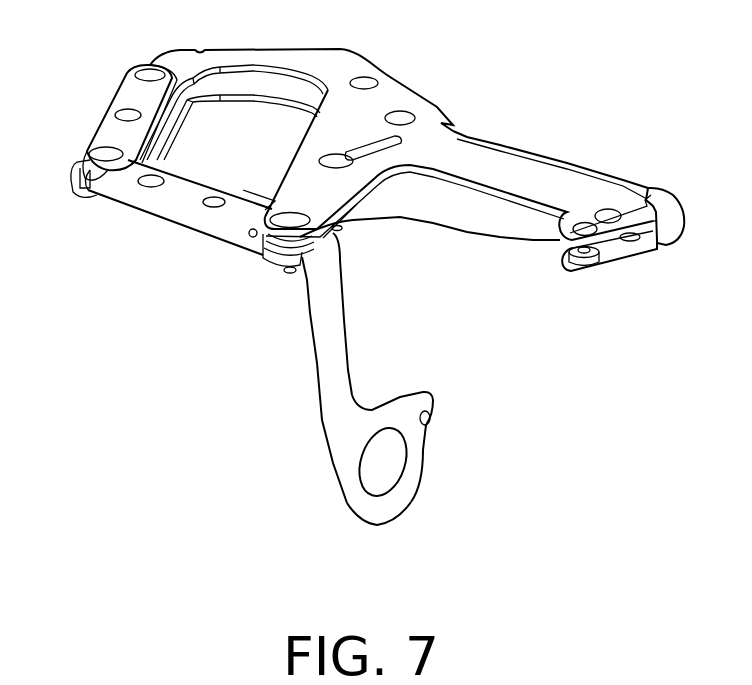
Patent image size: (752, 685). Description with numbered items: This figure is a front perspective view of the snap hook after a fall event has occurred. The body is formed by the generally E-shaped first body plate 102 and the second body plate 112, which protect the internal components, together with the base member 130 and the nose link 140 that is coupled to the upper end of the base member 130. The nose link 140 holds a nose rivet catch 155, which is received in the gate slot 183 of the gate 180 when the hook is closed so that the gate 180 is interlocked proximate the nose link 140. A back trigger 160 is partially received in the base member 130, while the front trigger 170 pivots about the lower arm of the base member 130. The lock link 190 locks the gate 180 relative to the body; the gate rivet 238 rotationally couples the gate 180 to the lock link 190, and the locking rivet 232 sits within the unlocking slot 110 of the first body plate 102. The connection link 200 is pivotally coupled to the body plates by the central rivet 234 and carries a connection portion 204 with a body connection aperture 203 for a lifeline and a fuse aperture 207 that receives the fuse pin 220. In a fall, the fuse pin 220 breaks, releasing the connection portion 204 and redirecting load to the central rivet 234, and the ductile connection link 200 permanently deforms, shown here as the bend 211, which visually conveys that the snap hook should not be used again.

The first body plate 102 is at (455, 150).
The unlocking slot 110 is at (387, 74).
The second body plate 112 is at (252, 80).
The base member 130 is at (670, 212).
The nose link 140 is at (142, 88).
The nose rivet catch 155 is at (104, 154).
The back trigger 160 is at (507, 145).
The front trigger 170 is at (457, 214).
The gate 180 is at (145, 196).
The gate slot 183 is at (93, 195).
The lock link 190 is at (258, 196).
The connection link 200 is at (340, 417).
The body connection aperture 203 is at (390, 465).
The connection portion 204 is at (350, 478).
The fuse aperture 207 is at (430, 413).
The bend 211 is at (332, 270).
The fuse pin 220 is at (584, 231).
The locking rivet 232 is at (340, 154).
The central rivet 234 is at (252, 236).
The gate rivet 238 is at (215, 200).